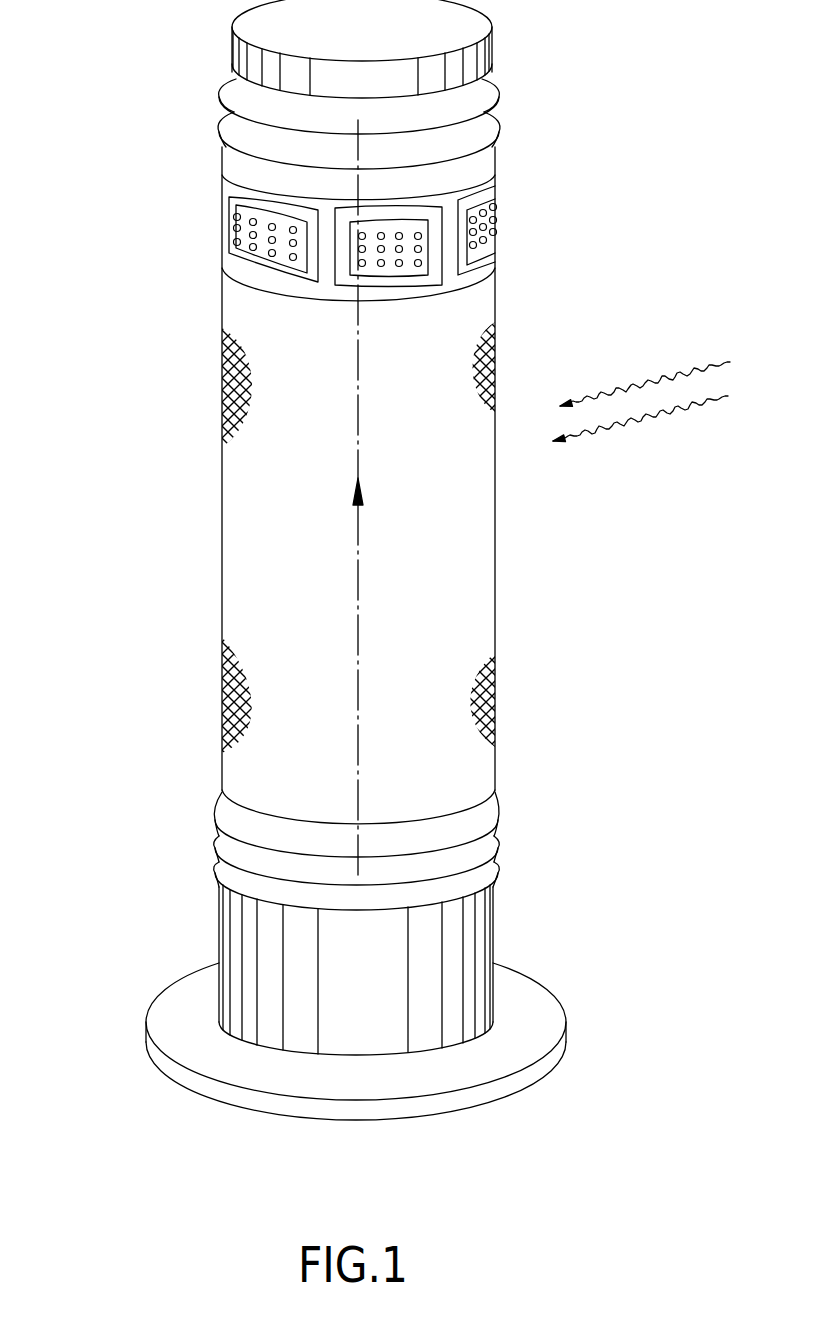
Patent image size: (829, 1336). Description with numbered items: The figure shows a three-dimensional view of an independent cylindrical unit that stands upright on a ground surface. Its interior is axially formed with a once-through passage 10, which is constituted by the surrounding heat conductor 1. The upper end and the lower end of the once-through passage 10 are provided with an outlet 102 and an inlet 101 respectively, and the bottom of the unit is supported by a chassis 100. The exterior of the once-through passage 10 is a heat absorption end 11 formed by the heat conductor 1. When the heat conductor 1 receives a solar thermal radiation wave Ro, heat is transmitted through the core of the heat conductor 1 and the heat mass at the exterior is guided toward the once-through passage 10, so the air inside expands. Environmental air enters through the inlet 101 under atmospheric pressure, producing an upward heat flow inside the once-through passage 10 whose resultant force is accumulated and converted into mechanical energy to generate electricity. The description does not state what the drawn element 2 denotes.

The heat conductor 1 is at (496, 622).
The display panel band 2 is at (207, 233).
The once-through passage 10 is at (357, 577).
The heat absorption end 11 is at (497, 345).
The chassis 100 is at (193, 1005).
The inlet 101 is at (517, 833).
The outlet 102 is at (507, 122).
The solar thermal radiation wave Ro is at (641, 394).